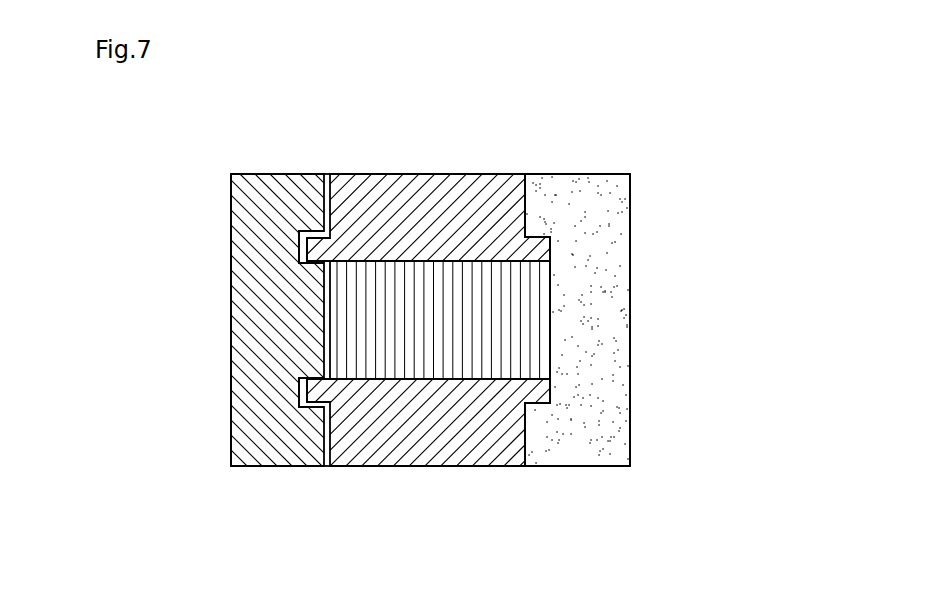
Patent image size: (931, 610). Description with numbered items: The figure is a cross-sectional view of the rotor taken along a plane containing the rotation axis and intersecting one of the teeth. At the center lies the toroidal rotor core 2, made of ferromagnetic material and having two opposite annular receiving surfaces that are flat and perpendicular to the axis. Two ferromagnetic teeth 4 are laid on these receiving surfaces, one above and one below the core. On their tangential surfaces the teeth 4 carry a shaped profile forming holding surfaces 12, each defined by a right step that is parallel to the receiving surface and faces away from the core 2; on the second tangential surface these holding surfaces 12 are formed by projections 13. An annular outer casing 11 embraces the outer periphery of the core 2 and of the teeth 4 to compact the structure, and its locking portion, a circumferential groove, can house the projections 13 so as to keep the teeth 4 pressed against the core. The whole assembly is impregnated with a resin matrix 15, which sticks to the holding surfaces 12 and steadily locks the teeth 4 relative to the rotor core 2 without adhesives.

The toroidal rotor core 2 is at (498, 305).
The teeth 4 is at (453, 208).
The outer casing 11 is at (263, 328).
The holding surface 12 is at (318, 235).
The projections 13 is at (330, 251).
The resin matrix 15 is at (602, 348).